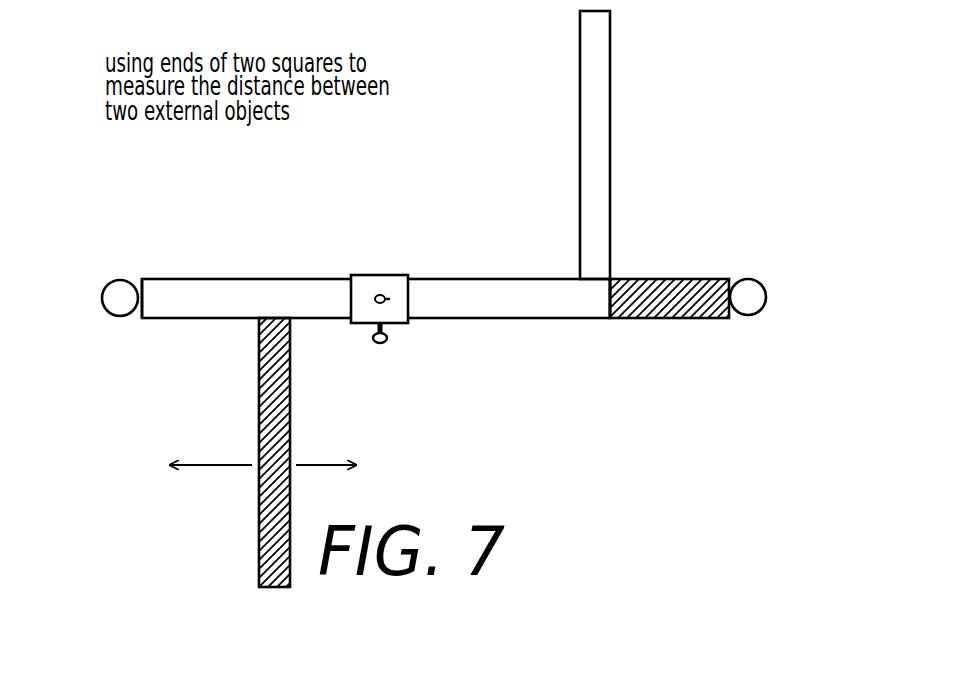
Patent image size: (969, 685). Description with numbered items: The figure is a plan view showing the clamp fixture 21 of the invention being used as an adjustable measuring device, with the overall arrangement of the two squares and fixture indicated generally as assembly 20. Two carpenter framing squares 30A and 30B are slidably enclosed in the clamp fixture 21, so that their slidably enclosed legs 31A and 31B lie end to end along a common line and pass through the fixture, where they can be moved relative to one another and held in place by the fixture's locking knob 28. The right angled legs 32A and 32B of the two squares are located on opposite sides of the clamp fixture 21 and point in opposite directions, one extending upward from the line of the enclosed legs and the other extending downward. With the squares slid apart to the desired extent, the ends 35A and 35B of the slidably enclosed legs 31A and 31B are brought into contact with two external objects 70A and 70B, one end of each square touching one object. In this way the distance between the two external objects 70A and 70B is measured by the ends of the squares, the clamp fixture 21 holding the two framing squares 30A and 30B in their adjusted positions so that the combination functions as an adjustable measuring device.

The measuring assembly of two squares 20 is at (461, 237).
The clamp fixture 21 is at (380, 275).
The locking knob 28 is at (382, 344).
The carpenter framing square 30A is at (416, 201).
The carpenter framing square 30B is at (548, 389).
The slidably enclosed leg 31A is at (568, 318).
The slidably enclosed leg 31B is at (665, 318).
The right angled leg 32A is at (578, 107).
The right angled leg 32B is at (290, 373).
The end of slidably enclosed leg 35A is at (138, 318).
The end of slidably enclosed leg 35B is at (732, 278).
The external object 70A is at (128, 282).
The external object 70B is at (755, 318).